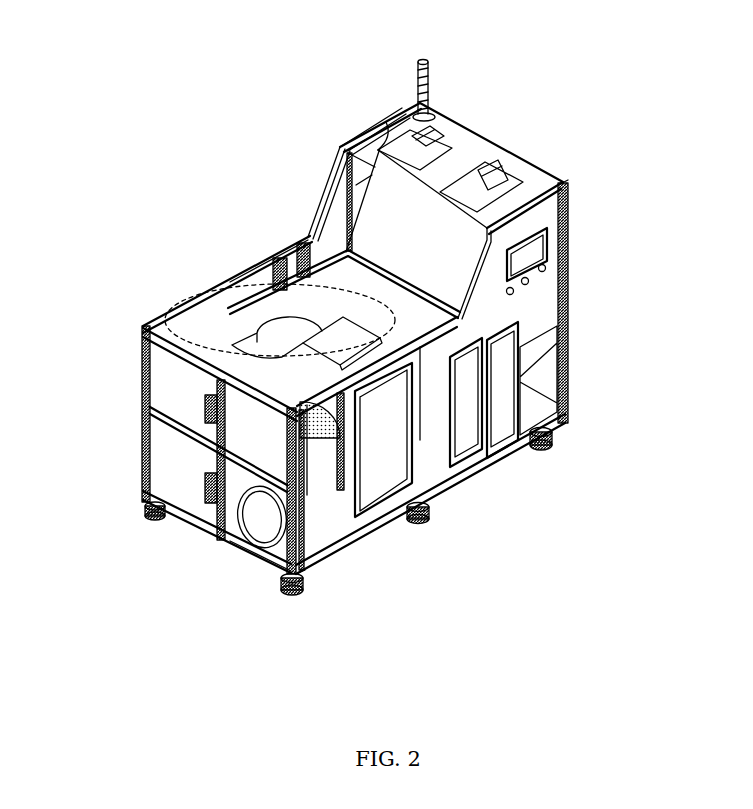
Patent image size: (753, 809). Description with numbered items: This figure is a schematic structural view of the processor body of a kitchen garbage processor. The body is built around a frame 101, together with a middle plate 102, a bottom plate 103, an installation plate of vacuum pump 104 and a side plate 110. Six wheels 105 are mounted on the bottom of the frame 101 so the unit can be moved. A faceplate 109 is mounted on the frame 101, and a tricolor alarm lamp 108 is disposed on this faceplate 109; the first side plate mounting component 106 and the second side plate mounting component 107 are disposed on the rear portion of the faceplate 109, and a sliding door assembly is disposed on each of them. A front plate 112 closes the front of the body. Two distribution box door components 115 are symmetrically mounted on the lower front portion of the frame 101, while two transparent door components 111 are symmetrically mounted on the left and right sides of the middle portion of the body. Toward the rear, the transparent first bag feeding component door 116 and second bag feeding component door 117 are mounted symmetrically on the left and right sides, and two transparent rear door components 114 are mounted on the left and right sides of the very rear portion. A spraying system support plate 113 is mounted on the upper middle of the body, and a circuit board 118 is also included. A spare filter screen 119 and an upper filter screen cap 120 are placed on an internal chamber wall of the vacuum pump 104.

The frame 101 is at (308, 403).
The middle plate 102 is at (221, 321).
The bottom plate 103 is at (408, 476).
The installation plate of vacuum pump 104 is at (167, 455).
The wheel 105 is at (265, 631).
The first side plate mounting component 106 is at (257, 96).
The second side plate mounting component 107 is at (490, 211).
The tricolor alarm lamp 108 is at (453, 64).
The faceplate 109 is at (220, 130).
The side plate 110 is at (370, 629).
The door component 111 is at (488, 511).
The top rail 112 is at (178, 220).
The spraying system support plate 113 is at (215, 301).
The rear door component 114 is at (560, 388).
The distribution box door component 115 is at (169, 614).
The first bag feeding component door 116 is at (552, 110).
The second bag feeding component door 117 is at (350, 89).
The circuit board 118 is at (170, 517).
The spare filter screen 119 is at (503, 517).
The upper filter screen cap 120 is at (418, 545).